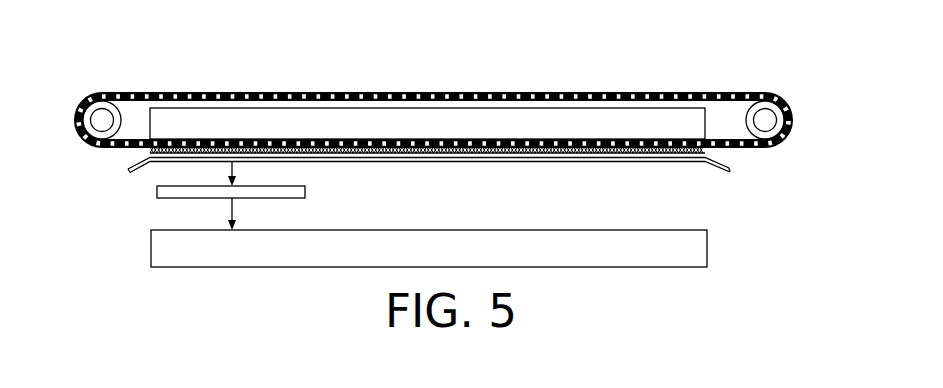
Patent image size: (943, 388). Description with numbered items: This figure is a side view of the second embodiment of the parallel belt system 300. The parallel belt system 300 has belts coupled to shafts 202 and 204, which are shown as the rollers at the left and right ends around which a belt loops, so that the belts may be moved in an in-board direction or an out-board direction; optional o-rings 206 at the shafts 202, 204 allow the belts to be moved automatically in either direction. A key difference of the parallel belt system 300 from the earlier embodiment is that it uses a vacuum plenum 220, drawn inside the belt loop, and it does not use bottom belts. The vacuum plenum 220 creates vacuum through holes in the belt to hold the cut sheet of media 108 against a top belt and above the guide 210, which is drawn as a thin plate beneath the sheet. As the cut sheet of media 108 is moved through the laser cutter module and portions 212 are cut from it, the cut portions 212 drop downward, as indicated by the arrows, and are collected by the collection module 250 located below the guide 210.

The parallel belt system 300 is at (437, 65).
The vacuum plenum 220 is at (262, 108).
The o-rings 206 is at (83, 119).
The shaft 202 is at (102, 121).
The shaft 204 is at (765, 119).
The cut sheet of media 108 is at (707, 149).
The guide 210 is at (730, 169).
The portions 212 is at (305, 192).
The collection module 250 is at (707, 248).